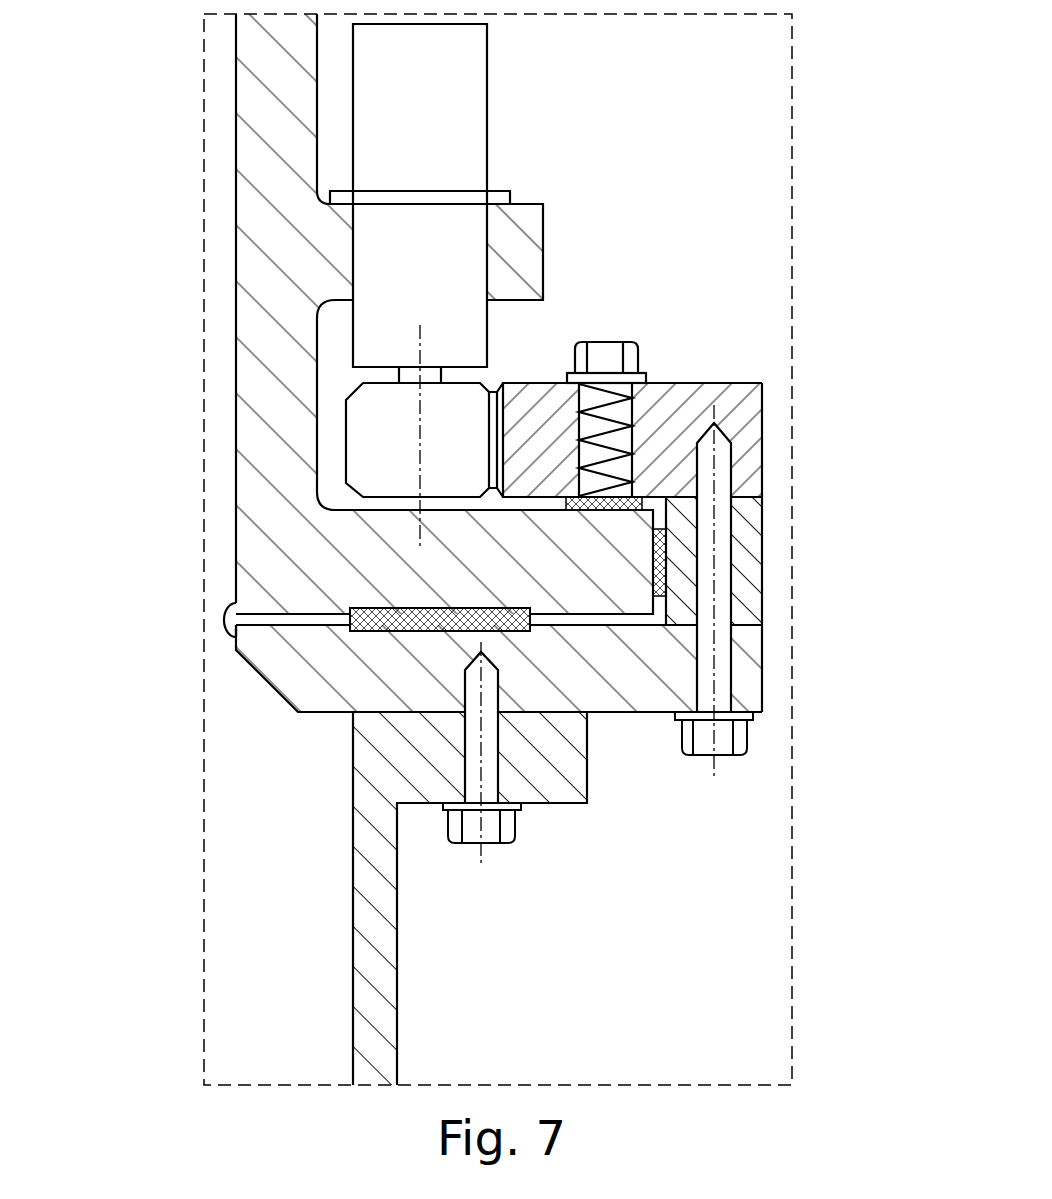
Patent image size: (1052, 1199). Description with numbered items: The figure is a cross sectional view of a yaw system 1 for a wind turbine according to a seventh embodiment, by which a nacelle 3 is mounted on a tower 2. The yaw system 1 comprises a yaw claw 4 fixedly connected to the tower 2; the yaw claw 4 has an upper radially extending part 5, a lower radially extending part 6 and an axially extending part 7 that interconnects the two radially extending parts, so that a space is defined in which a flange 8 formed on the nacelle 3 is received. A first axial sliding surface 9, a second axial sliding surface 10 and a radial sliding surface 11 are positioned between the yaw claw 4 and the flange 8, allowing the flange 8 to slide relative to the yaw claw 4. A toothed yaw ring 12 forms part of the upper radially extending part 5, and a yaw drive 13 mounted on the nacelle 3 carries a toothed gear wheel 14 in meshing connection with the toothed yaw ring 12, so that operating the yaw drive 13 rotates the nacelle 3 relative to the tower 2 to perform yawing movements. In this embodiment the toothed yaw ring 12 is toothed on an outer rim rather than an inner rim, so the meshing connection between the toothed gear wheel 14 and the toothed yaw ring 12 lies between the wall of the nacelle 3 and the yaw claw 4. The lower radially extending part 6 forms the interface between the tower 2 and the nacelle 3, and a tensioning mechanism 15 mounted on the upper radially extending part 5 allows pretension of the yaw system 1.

The yaw system 1 is at (136, 446).
The tower 2 is at (373, 858).
The nacelle 3 is at (252, 252).
The yaw claw 4 is at (812, 626).
The upper radially extending part 5 is at (738, 402).
The lower radially extending part 6 is at (603, 683).
The axially extending part 7 is at (748, 524).
The flange 8 is at (598, 600).
The first axial sliding surface 9 is at (643, 504).
The second axial sliding surface 10 is at (450, 622).
The radial sliding surface 11 is at (660, 556).
The toothed yaw ring 12 is at (525, 437).
The yaw drive 13 is at (448, 112).
The toothed gear wheel 14 is at (373, 410).
The tensioning mechanism 15 is at (605, 357).